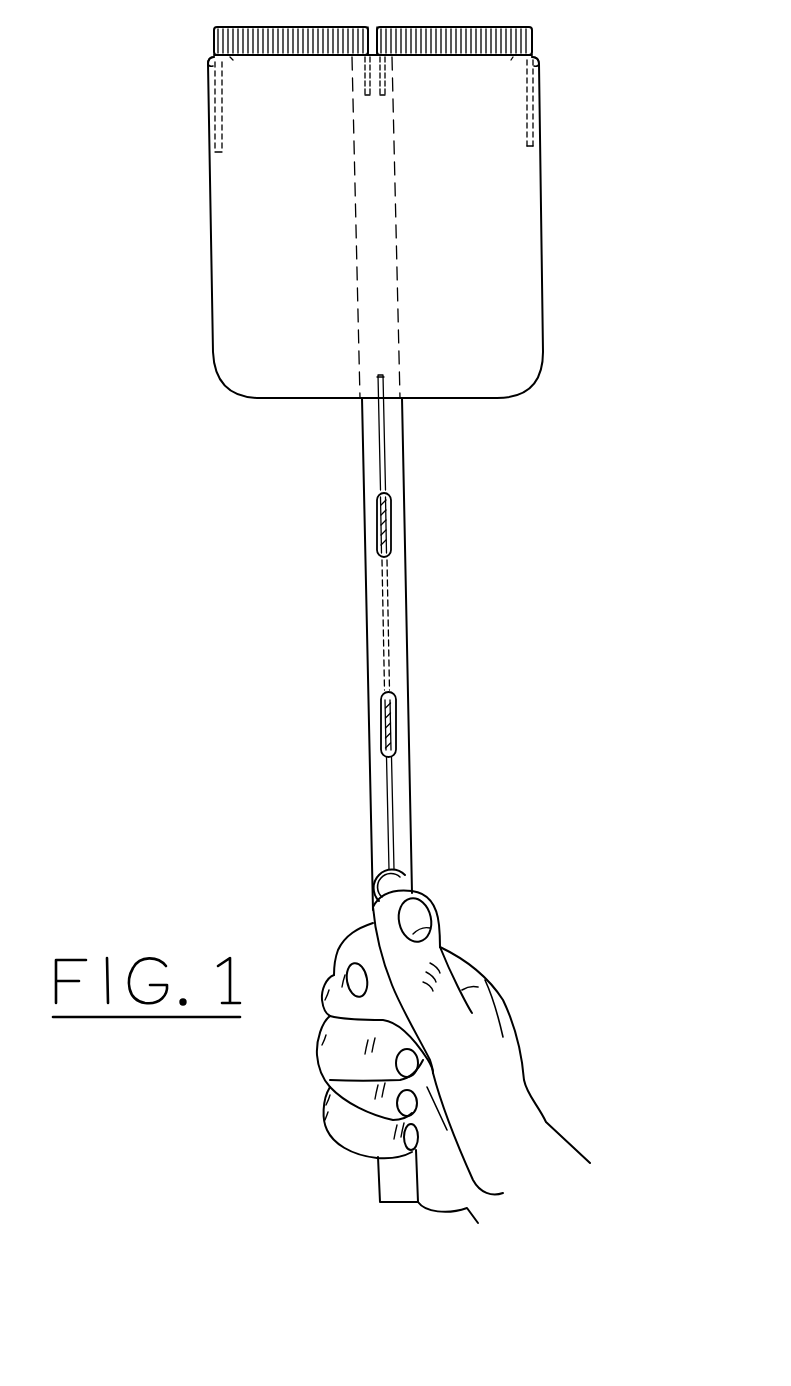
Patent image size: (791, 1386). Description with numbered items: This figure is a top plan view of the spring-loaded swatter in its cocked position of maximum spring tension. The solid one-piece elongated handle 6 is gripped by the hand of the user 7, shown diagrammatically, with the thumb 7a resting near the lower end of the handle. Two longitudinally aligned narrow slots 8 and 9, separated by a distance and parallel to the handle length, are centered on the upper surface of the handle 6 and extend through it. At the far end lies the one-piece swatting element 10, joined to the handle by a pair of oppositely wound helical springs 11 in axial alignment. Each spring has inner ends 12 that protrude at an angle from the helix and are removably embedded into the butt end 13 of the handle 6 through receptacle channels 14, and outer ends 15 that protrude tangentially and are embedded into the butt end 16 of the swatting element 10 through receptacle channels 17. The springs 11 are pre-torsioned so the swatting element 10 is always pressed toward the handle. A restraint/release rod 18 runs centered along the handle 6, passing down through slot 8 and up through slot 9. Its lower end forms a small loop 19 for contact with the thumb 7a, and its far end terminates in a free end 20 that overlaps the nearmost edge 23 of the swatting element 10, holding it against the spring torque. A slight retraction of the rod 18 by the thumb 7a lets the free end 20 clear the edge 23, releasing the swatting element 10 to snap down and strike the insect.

The handle 6 is at (368, 787).
The hand of the user 7 is at (473, 1044).
The thumb 7a is at (413, 892).
The slot 8 is at (397, 713).
The slot 9 is at (393, 523).
The swatting element 10 is at (215, 323).
The helical springs 11 is at (233, 26).
The inner ends 12 is at (367, 97).
The butt end of handle 13 is at (352, 58).
The receptacle channels 14 is at (362, 60).
The outer ends 15 is at (214, 153).
The butt end of swatting element 16 is at (231, 60).
The receptacle channels 17 is at (208, 66).
The restraint/release rod 18 is at (380, 470).
The loop 19 is at (372, 885).
The free end 20 is at (388, 376).
The edge of swatting element 23 is at (364, 402).